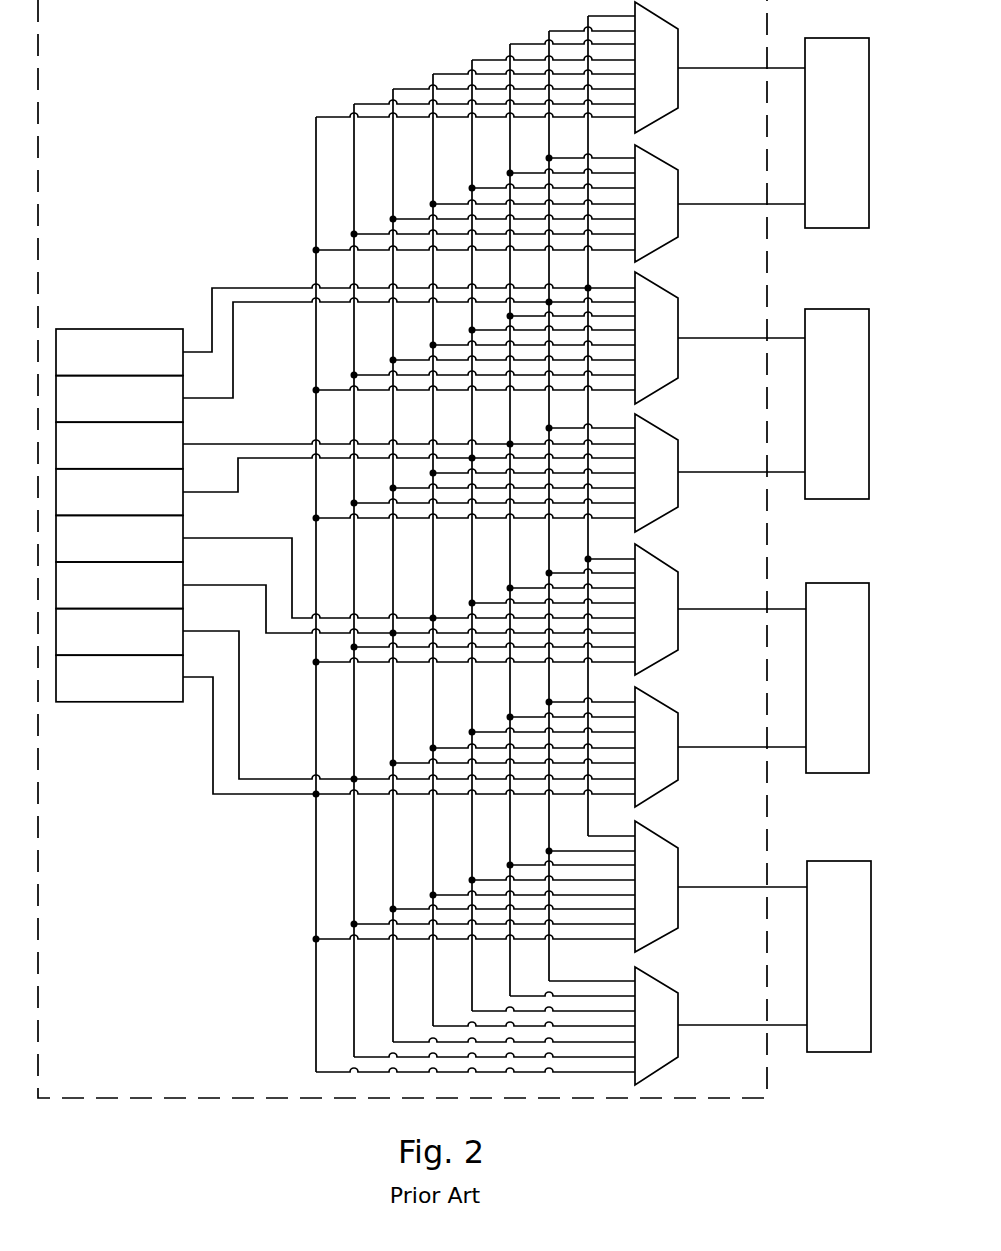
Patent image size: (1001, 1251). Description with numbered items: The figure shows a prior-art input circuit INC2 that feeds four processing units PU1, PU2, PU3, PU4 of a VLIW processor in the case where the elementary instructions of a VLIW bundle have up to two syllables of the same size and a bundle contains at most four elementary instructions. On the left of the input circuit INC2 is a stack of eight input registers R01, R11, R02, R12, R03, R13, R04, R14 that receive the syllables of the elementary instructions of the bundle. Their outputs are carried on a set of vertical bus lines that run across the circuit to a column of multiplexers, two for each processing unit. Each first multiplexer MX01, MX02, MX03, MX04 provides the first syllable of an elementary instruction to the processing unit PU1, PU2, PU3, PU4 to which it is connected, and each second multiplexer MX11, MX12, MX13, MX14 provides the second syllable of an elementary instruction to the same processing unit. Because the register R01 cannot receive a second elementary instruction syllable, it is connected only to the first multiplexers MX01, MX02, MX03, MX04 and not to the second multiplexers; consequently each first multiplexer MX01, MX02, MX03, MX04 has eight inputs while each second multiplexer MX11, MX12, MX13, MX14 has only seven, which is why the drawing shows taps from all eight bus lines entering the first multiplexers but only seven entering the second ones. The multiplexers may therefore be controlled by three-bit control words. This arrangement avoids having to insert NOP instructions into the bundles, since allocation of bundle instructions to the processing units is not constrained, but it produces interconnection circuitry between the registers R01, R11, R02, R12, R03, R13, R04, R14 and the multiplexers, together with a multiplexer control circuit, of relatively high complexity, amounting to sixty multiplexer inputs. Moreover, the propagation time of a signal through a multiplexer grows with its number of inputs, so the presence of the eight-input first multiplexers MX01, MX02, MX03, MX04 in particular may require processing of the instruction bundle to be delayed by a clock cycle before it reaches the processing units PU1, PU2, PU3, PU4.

The input circuit INC2 is at (402, 549).
The register R01 is at (322, 330).
The register R11 is at (302, 360).
The register R02 is at (283, 445).
The register R12 is at (264, 484).
The register R03 is at (244, 566).
The register R13 is at (224, 597).
The register R04 is at (205, 694).
The register R14 is at (186, 724).
The first multiplexer MX01 is at (657, 12).
The second multiplexer MX11 is at (660, 248).
The first multiplexer MX02 is at (657, 284).
The second multiplexer MX12 is at (660, 518).
The first multiplexer MX03 is at (657, 556).
The second multiplexer MX13 is at (660, 793).
The first multiplexer MX04 is at (658, 833).
The second multiplexer MX14 is at (662, 1068).
The processing unit PU1 is at (773, 133).
The processing unit PU2 is at (773, 404).
The processing unit PU3 is at (773, 678).
The processing unit PU4 is at (774, 956).